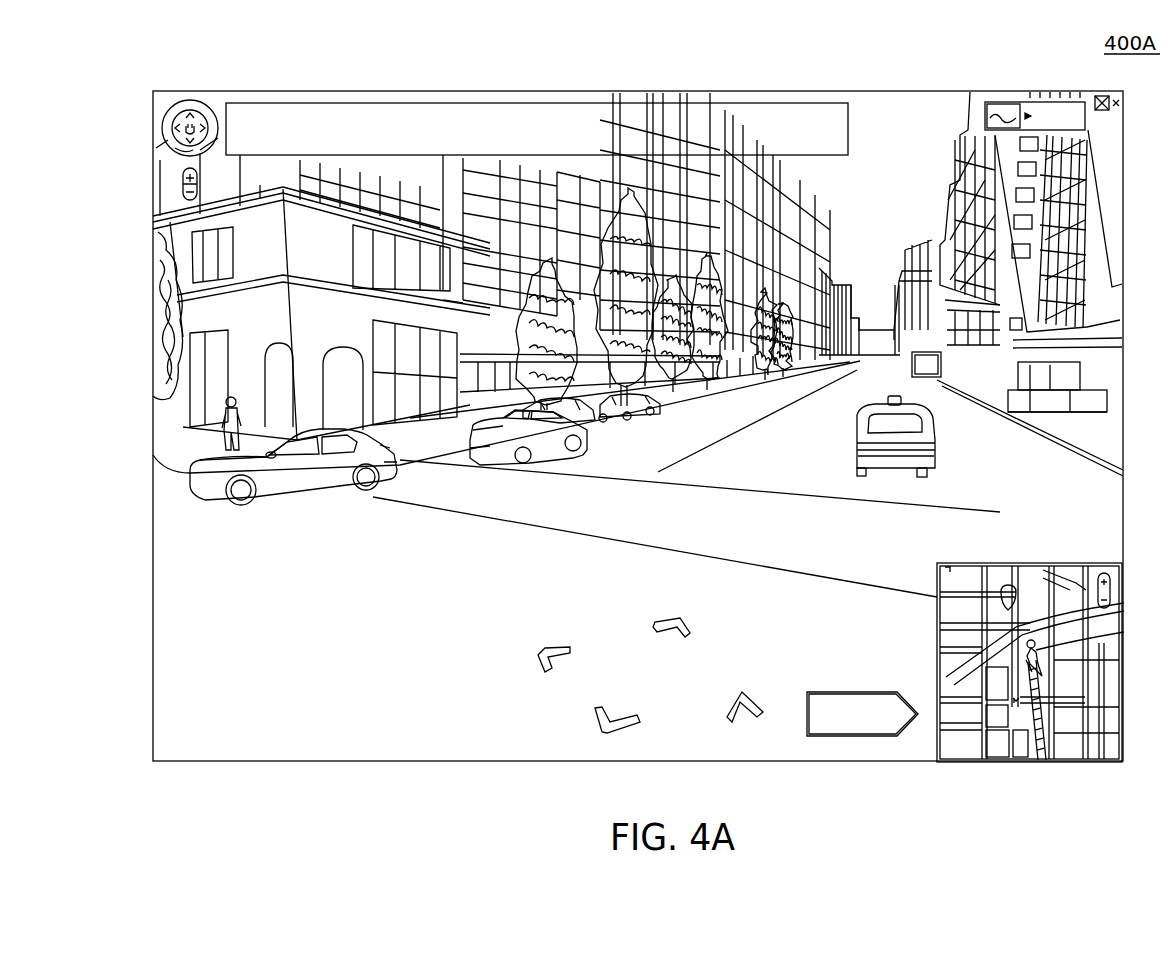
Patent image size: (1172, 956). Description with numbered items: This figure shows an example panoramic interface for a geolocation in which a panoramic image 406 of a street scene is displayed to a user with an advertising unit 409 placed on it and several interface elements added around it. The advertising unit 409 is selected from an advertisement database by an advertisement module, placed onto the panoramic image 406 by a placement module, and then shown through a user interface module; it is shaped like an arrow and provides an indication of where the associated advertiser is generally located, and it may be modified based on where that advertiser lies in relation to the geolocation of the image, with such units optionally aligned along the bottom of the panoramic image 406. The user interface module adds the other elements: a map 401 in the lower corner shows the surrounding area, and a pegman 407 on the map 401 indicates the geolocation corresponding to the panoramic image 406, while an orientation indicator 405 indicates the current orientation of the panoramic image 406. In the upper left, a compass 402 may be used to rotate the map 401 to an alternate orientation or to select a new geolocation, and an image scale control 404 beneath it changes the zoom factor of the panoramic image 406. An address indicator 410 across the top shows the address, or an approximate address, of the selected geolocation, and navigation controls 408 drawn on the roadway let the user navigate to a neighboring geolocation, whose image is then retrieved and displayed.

The map 401 is at (962, 765).
The compass 402 is at (190, 100).
The image scale control 404 is at (165, 180).
The orientation indicator 405 is at (1040, 762).
The panoramic image 406 is at (912, 91).
The pegman 407 is at (1036, 656).
The navigation controls 408 is at (606, 735).
The advertising unit 409 is at (850, 738).
The address indicator 410 is at (318, 103).